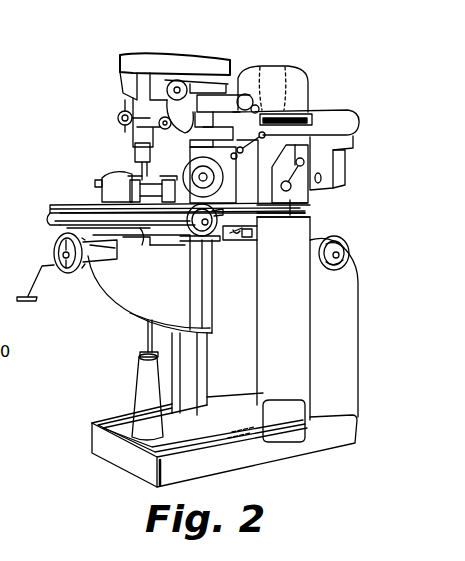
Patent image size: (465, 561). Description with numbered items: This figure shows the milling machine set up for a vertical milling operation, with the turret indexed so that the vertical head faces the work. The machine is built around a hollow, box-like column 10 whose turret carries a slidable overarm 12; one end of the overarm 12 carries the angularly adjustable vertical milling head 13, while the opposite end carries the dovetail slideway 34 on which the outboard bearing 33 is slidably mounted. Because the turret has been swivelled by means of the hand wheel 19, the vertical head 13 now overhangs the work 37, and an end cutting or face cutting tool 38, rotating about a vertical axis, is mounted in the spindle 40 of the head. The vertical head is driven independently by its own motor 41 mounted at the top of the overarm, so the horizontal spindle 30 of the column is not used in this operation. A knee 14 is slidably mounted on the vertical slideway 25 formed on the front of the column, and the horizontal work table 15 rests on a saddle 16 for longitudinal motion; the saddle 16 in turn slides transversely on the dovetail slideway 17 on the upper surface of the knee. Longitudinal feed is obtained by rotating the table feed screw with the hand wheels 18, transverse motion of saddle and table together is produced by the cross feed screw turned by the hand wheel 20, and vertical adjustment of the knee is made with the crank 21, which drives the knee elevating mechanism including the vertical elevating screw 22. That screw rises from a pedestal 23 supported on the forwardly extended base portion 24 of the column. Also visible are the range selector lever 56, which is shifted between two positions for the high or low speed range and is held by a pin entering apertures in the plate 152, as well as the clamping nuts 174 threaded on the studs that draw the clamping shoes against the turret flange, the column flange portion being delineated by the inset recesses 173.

The column 10 is at (355, 356).
The overarm 12 is at (345, 113).
The vertical milling head 13 is at (112, 124).
The knee 14 is at (143, 312).
The work table 15 is at (78, 204).
The saddle 16 is at (168, 240).
The dovetail slideway 17 is at (123, 246).
The hand wheels 18 is at (190, 250).
The hand wheel 19 is at (340, 272).
The hand wheel 20 is at (68, 278).
The crank 21 is at (33, 290).
The vertical elevating screw 22 is at (146, 348).
The pedestal 23 is at (146, 397).
The base portion 24 is at (150, 448).
The vertical slideway 25 is at (197, 372).
The horizontal spindle 30 is at (208, 177).
The outboard bearing 33 is at (346, 158).
The dovetail slideway 34 is at (206, 124).
The work 37 is at (108, 176).
The cutting tool 38 is at (157, 174).
The spindle 40 is at (137, 154).
The motor 41 is at (290, 72).
The range selector lever 56 is at (283, 152).
The plate 152 is at (289, 203).
The inset recesses 173 is at (250, 238).
The clamping nuts 174 is at (229, 235).